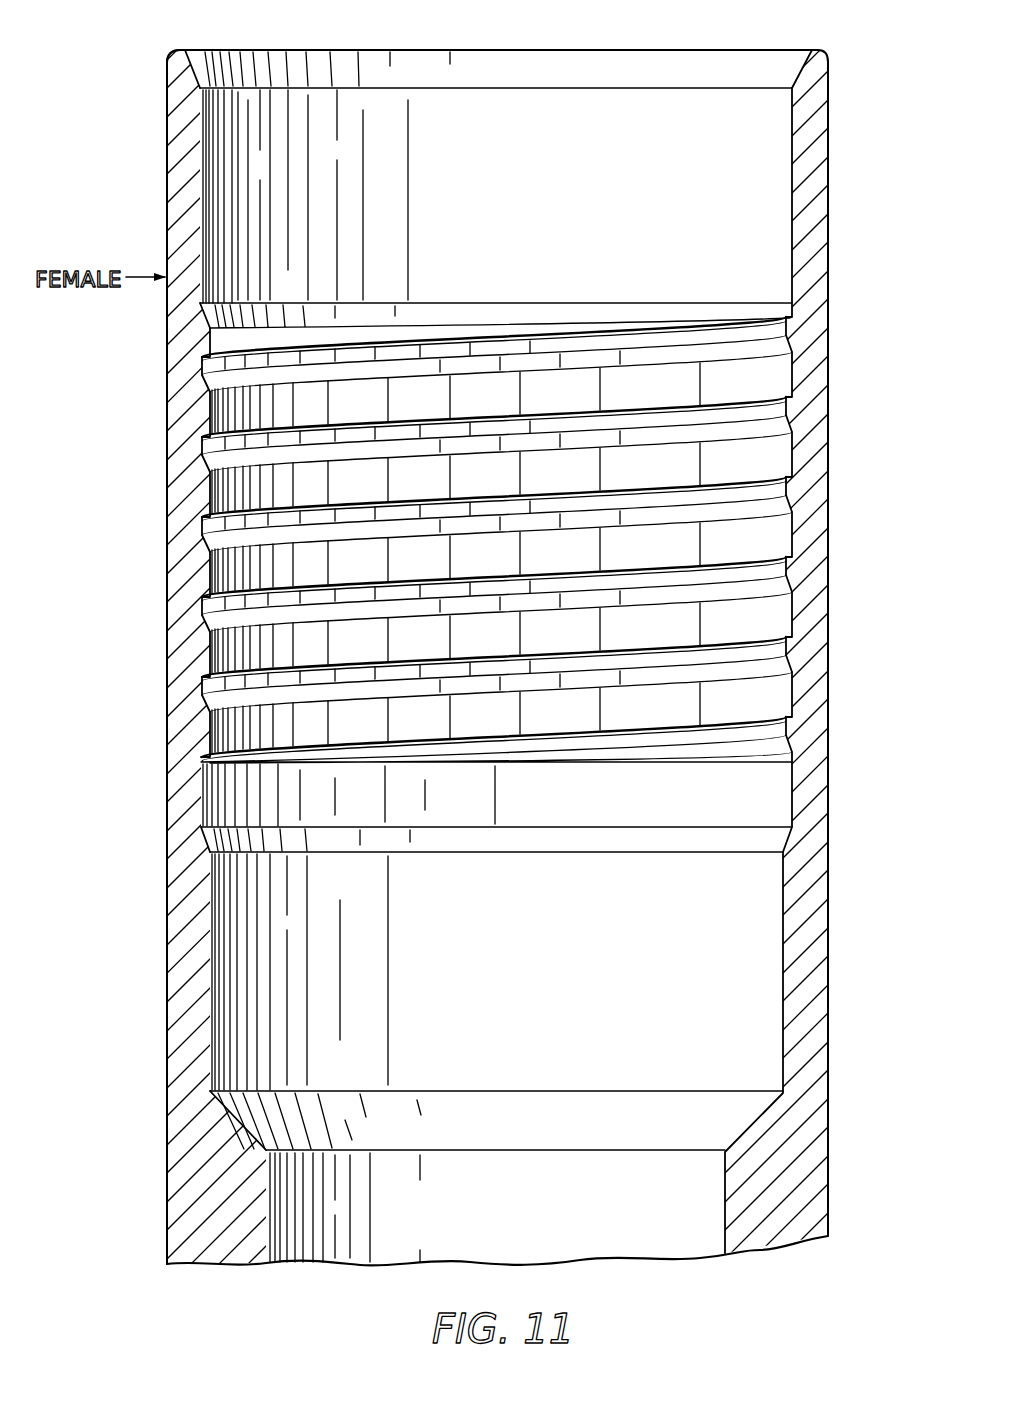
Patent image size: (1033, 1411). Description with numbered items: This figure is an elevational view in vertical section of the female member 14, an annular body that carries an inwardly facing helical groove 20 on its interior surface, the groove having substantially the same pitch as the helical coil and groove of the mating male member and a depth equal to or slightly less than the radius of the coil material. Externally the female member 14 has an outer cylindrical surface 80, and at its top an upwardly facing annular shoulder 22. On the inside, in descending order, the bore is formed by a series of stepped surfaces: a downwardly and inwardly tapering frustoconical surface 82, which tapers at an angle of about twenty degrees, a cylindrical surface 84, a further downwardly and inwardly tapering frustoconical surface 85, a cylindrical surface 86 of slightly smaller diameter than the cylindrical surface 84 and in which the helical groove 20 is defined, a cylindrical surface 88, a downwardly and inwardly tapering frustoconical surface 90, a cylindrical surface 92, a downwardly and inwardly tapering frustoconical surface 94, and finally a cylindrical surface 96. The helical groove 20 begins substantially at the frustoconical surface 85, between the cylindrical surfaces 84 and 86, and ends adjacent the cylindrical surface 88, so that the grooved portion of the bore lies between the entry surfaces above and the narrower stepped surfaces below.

The female member 14 is at (830, 190).
The helical groove 20 is at (790, 481).
The upwardly facing annular shoulder 22 is at (185, 48).
The outer cylindrical surface 80 is at (167, 156).
The frustoconical surface 82 is at (205, 68).
The cylindrical surface 84 is at (203, 132).
The frustoconical surface 85 is at (214, 305).
The cylindrical surface 86 is at (220, 336).
The cylindrical surface 88 is at (205, 790).
The frustoconical surface 90 is at (218, 836).
The cylindrical surface 92 is at (212, 962).
The frustoconical surface 94 is at (240, 1120).
The cylindrical surface 96 is at (270, 1186).